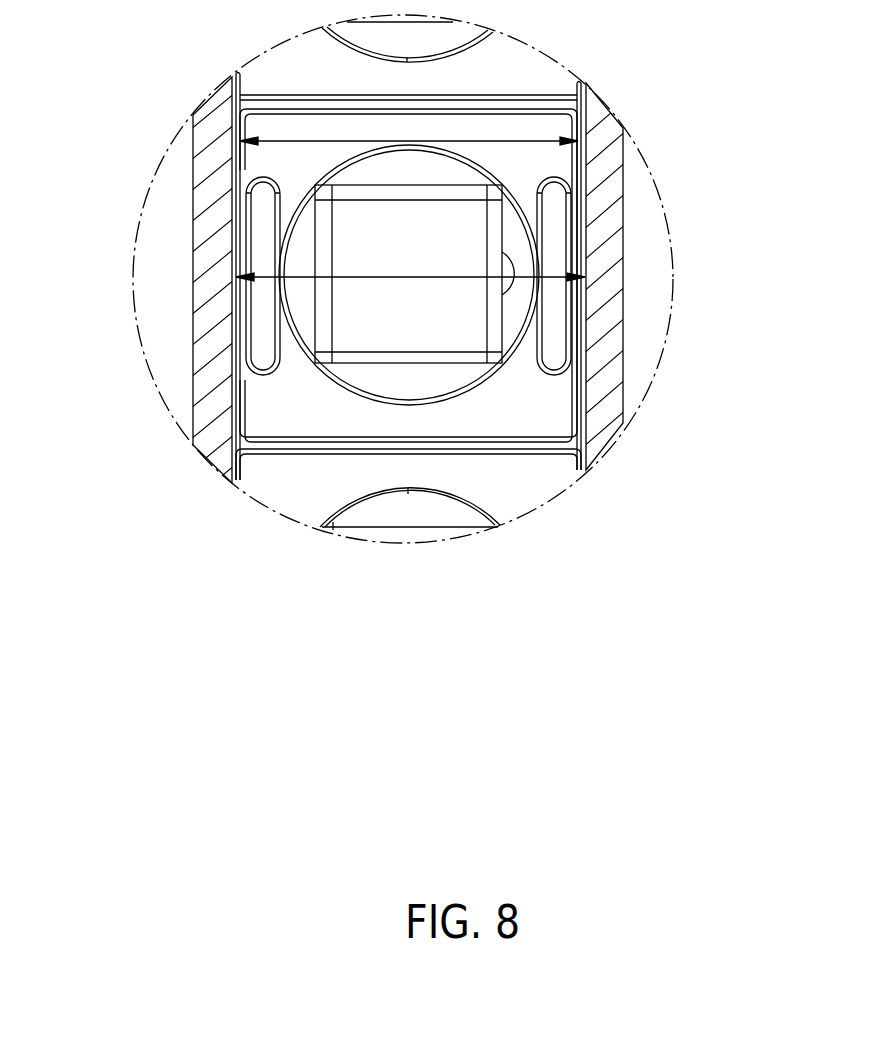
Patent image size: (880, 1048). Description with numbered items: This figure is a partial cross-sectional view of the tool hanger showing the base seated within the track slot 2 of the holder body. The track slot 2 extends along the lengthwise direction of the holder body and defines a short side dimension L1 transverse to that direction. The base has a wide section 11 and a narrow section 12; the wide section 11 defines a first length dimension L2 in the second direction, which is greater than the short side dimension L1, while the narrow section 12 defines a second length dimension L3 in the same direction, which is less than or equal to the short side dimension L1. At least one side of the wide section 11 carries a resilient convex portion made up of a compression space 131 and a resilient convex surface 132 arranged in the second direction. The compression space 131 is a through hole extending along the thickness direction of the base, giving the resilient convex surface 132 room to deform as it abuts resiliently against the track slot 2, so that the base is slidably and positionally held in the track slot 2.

The track slot 2 is at (237, 108).
The wide section 11 is at (586, 188).
The narrow section 12 is at (586, 130).
The compression space 131 is at (553, 329).
The resilient convex surface 132 is at (586, 256).
The short side dimension L1 is at (297, 443).
The first length dimension L2 is at (403, 279).
The second length dimension L3 is at (445, 141).